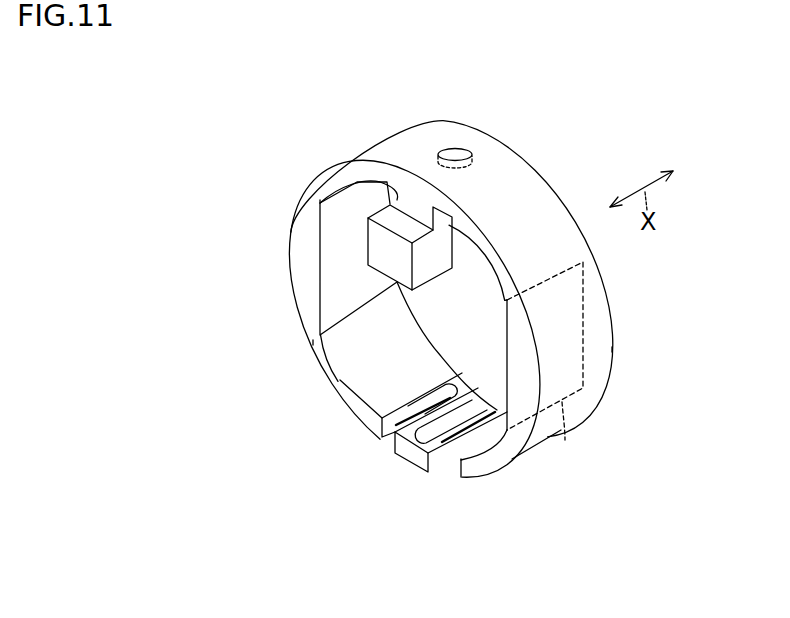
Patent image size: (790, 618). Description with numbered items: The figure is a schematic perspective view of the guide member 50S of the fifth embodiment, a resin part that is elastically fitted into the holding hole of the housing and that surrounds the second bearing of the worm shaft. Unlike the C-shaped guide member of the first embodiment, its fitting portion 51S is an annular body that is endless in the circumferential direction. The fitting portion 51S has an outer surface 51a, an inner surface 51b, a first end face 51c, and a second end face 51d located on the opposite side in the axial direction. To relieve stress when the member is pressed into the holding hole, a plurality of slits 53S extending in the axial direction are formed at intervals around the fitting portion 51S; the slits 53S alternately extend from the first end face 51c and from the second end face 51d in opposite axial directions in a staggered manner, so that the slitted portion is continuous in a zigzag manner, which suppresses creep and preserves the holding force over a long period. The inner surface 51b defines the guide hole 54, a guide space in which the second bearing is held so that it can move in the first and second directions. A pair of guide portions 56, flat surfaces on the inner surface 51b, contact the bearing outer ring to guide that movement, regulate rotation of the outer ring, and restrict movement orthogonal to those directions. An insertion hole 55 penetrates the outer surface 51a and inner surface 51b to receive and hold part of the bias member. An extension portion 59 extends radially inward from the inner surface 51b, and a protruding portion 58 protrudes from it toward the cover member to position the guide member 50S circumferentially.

The guide member 50S is at (501, 130).
The outer surface 51a is at (384, 149).
The inner surface 51b is at (360, 393).
The first end face 51c is at (613, 355).
The second end face 51d is at (320, 354).
The fitting portion 51S is at (531, 194).
The slits 53S is at (487, 410).
The guide hole 54 is at (500, 327).
The insertion hole 55 is at (452, 157).
The guide portions 56 is at (349, 283).
The protruding portion 58 is at (385, 250).
The extension portion 59 is at (330, 174).